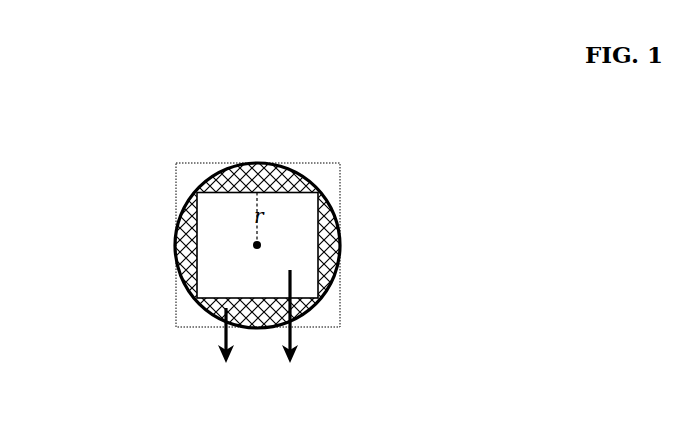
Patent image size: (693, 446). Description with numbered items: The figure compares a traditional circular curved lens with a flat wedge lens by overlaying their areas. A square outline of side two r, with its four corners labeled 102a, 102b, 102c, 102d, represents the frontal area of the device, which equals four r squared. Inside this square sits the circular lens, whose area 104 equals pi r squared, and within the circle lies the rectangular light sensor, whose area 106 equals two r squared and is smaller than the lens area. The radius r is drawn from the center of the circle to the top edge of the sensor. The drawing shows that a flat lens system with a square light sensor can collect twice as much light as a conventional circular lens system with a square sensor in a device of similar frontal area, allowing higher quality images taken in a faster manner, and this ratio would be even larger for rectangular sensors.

The area corner 102a is at (197, 176).
The area corner 102b is at (318, 178).
The area corner 102c is at (330, 321).
The area corner 102d is at (176, 321).
The area of the circular lens 104 is at (219, 351).
The area of the rectangular light sensor 106 is at (297, 332).